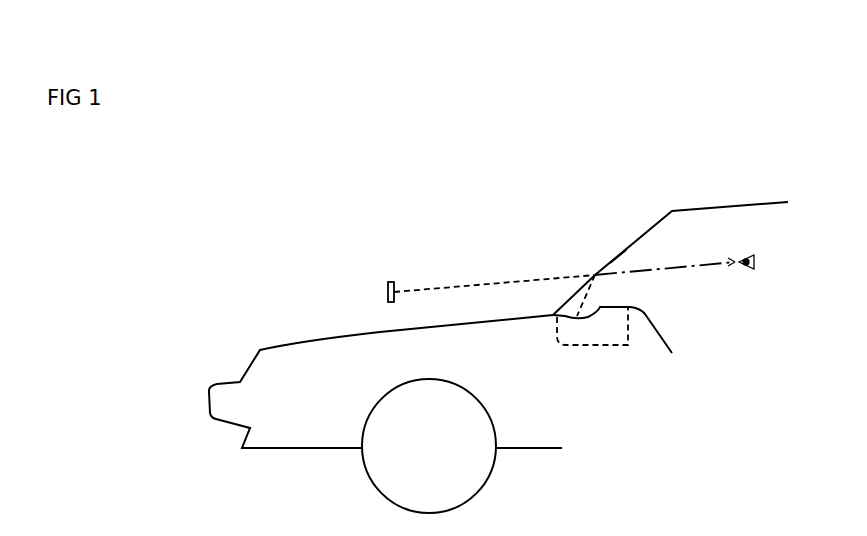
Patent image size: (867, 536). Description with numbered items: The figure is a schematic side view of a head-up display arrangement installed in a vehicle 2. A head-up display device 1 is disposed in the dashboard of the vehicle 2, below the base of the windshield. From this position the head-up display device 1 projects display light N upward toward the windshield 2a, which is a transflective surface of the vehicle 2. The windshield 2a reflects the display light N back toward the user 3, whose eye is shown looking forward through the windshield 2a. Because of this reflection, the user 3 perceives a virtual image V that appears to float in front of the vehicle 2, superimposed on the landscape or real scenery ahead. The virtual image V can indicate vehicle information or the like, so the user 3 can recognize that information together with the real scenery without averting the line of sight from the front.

The head-up display device 1 is at (603, 345).
The vehicle 2 is at (682, 201).
The windshield 2a is at (618, 256).
The user 3 is at (754, 259).
The virtual image V is at (395, 283).
The display light N is at (590, 290).